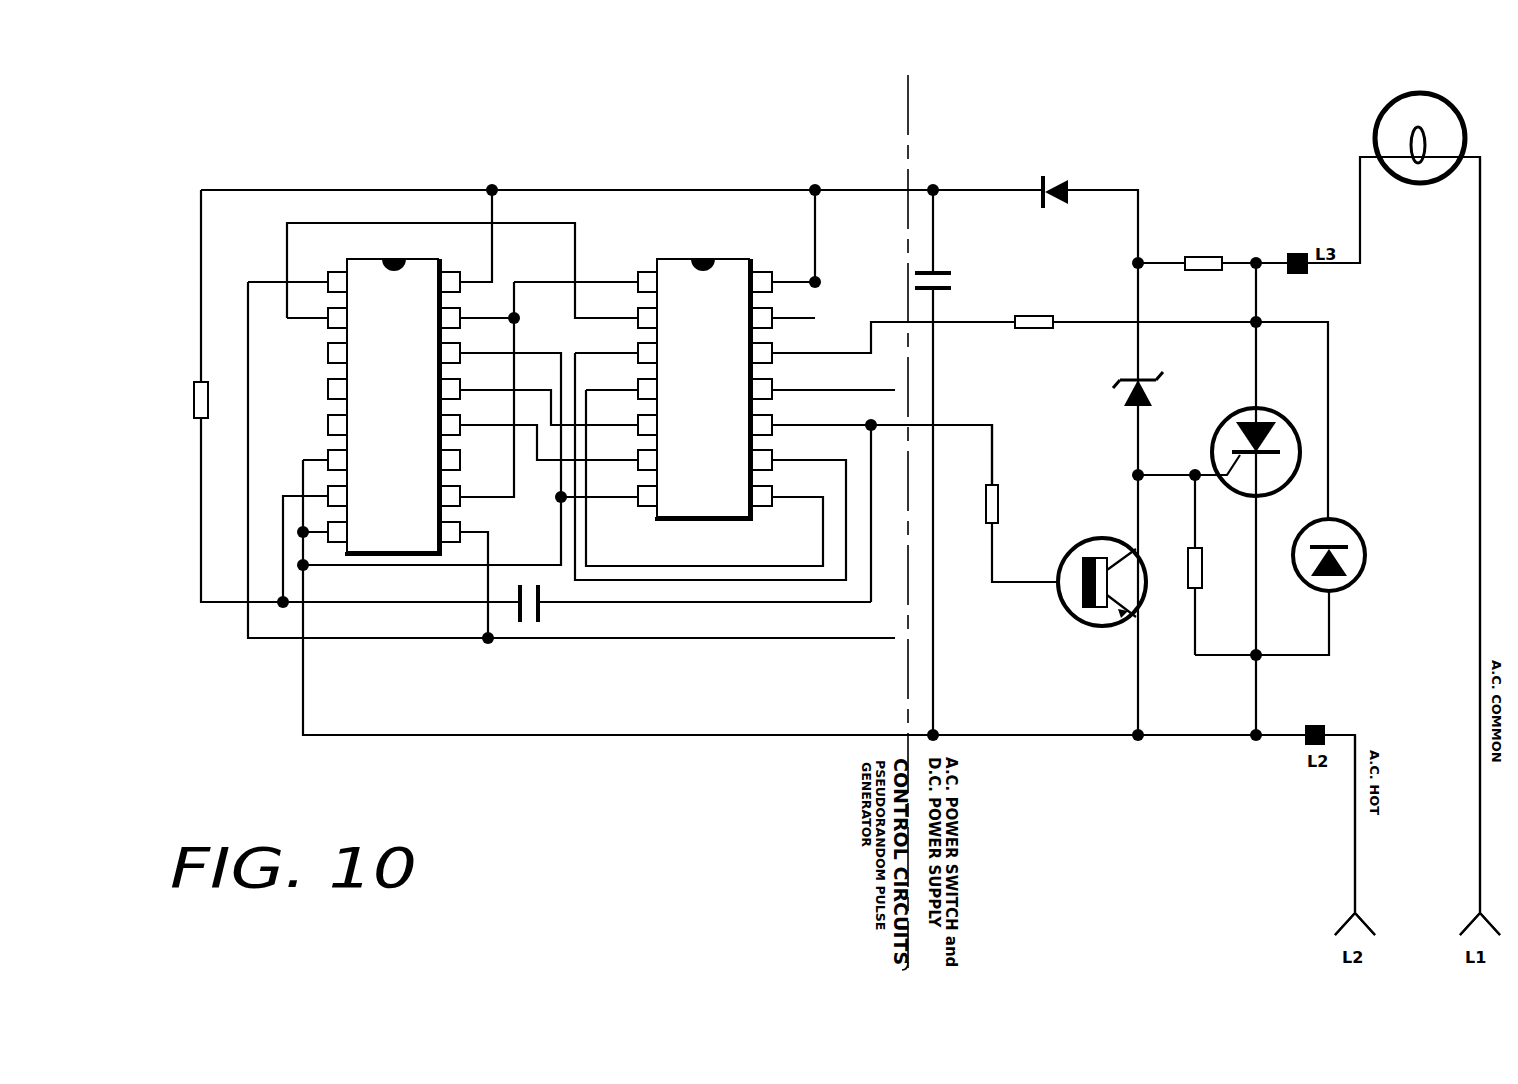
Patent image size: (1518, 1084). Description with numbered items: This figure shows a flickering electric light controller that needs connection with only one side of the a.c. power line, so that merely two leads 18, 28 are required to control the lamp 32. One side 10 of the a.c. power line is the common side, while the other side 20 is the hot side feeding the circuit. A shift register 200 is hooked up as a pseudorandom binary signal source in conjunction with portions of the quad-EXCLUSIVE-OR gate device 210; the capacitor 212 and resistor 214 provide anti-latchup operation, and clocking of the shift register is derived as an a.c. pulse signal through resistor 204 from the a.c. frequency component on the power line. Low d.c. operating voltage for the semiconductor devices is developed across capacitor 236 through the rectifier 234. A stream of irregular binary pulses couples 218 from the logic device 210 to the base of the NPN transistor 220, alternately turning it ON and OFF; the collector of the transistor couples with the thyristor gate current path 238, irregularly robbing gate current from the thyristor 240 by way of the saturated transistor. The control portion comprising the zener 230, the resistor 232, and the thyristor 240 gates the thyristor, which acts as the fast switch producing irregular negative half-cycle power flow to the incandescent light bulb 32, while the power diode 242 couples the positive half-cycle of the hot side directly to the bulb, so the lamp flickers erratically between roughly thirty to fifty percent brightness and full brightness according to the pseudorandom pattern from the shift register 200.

The shift register 200 is at (426, 266).
The quad-EXCLUSIVE-OR gate device 210 is at (734, 252).
The capacitor 212 is at (533, 634).
The resistor 214 is at (192, 433).
The coupling of irregular binary pulses 218 is at (967, 423).
The NPN transistor 220 is at (1096, 636).
The zener 230 is at (1097, 396).
The resistor 232 is at (1228, 249).
The rectifier 234 is at (1030, 172).
The capacitor 236 is at (959, 257).
The thyristor gate current path 238 is at (1180, 464).
The thyristor 240 is at (1311, 456).
The power diode 242 is at (1380, 567).
The resistor 204 is at (1030, 341).
The lead 18 is at (1302, 241).
The lead 28 is at (1331, 719).
The other side of the a.c. power line 20 is at (1371, 877).
The one side of the a.c. power line 10 is at (1488, 867).
The incandescent light bulb 32 is at (1468, 121).